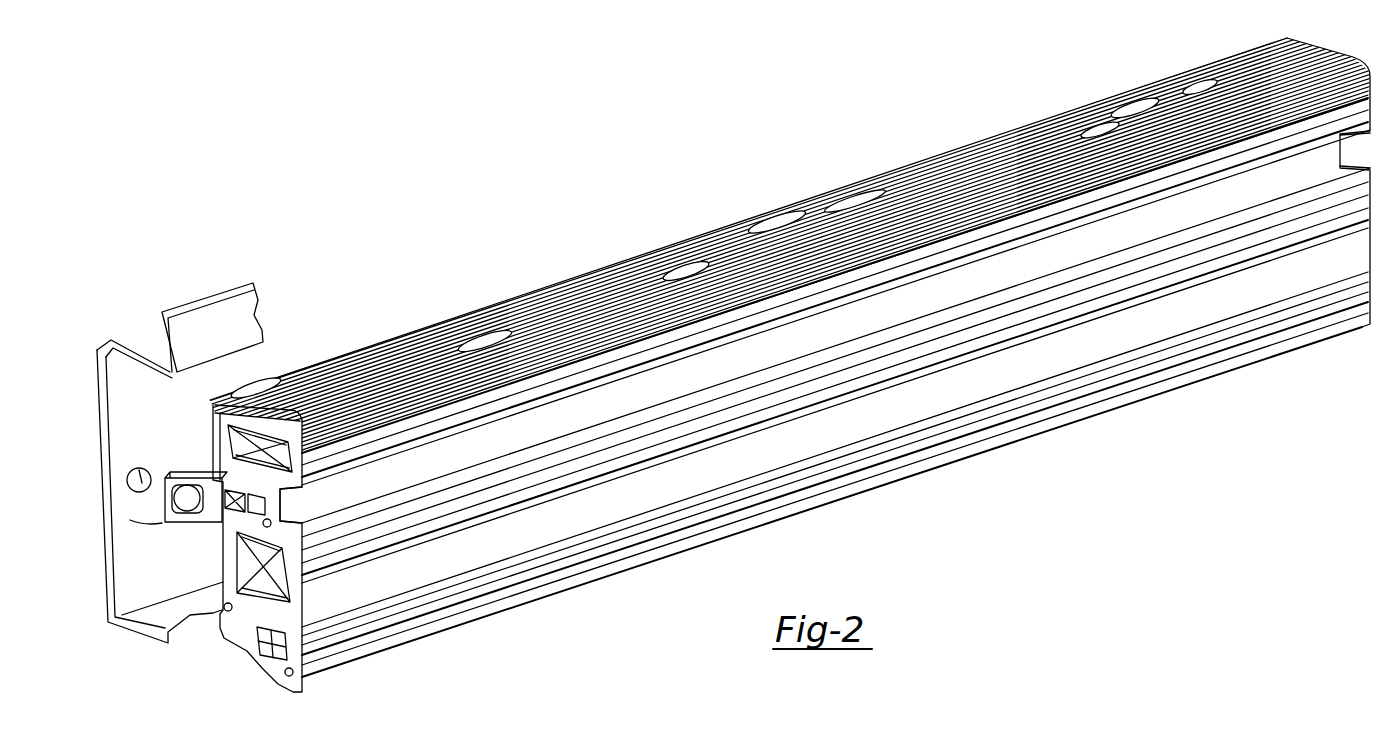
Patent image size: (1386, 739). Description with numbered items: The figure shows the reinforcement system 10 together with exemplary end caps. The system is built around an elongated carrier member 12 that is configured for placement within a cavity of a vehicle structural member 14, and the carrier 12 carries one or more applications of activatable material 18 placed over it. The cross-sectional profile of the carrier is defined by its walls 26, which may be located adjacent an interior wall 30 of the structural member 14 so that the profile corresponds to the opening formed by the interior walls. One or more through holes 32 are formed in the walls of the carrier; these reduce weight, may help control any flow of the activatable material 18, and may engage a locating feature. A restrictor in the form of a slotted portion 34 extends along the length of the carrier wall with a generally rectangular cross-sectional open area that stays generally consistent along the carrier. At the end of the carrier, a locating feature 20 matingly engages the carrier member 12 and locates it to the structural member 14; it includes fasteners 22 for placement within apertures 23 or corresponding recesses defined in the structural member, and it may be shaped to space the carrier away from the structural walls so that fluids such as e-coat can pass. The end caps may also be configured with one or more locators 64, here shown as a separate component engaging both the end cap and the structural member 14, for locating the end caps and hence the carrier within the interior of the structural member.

The reinforcement system 10 is at (712, 182).
The carrier member 12 is at (1065, 428).
The structural member 14 is at (131, 343).
The activatable material 18 is at (1205, 110).
The locating feature 20 is at (230, 658).
The fastener 22 is at (190, 515).
The aperture 23 is at (150, 472).
The wall 26 is at (171, 435).
The interior wall 30 is at (228, 385).
The through hole 32 is at (1095, 130).
The slotted portion 34 is at (908, 450).
The locator 64 is at (130, 520).